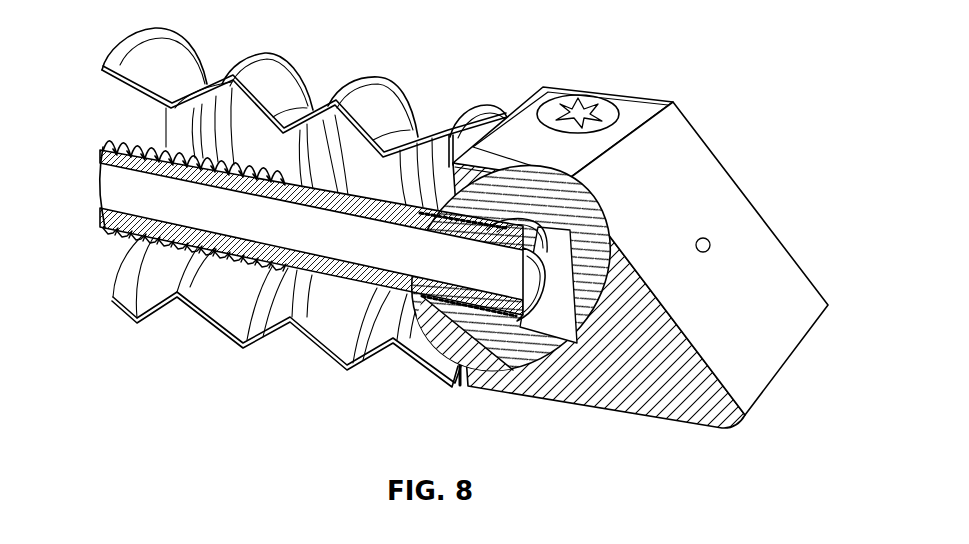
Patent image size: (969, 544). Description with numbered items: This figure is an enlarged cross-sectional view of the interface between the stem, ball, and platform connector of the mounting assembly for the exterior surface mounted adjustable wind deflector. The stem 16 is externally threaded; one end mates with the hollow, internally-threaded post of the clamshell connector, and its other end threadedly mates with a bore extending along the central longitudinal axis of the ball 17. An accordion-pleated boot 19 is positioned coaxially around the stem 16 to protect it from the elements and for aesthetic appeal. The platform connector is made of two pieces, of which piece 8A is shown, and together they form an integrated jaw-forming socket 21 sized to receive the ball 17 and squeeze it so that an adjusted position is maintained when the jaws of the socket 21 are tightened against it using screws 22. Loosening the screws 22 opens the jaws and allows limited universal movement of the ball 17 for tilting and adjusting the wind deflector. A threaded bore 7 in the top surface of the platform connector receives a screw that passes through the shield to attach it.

The threaded bore 7 is at (713, 243).
The platform connector piece 8A is at (777, 337).
The stem 16 is at (163, 210).
The ball 17 is at (440, 368).
The accordion-pleated boot 19 is at (250, 62).
The jaw-forming socket 21 is at (525, 368).
The screw 22 is at (580, 112).